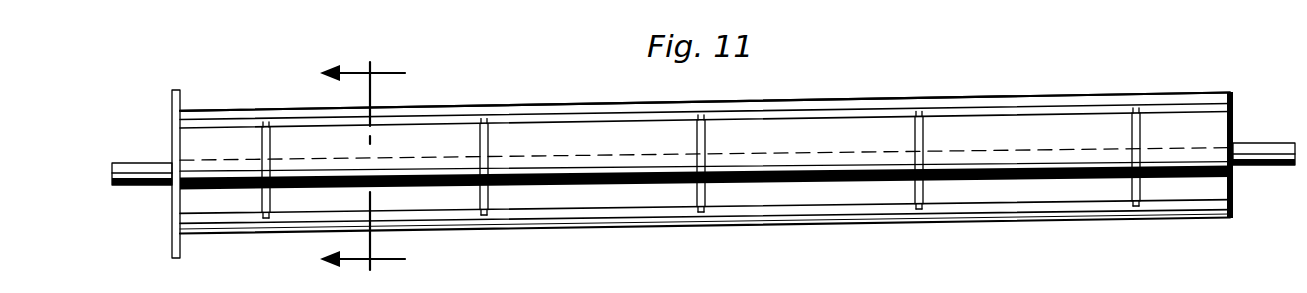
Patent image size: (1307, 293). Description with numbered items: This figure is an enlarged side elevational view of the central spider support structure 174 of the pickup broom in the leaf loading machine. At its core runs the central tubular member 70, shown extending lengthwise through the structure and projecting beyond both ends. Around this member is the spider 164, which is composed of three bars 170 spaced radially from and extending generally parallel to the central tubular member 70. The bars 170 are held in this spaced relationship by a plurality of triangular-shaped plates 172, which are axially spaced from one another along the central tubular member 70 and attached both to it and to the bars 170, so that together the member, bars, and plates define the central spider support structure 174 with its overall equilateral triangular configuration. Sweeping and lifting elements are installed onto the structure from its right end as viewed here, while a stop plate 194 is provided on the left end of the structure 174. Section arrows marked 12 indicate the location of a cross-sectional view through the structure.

The section line 12- 12 is at (380, 170).
The central tubular member 70 is at (656, 169).
The spider 164 is at (870, 90).
The bars 170 is at (773, 101).
The triangular-shaped plates 172 is at (271, 145).
The central spider support structure 174 is at (697, 148).
The stop plate 194 is at (172, 222).